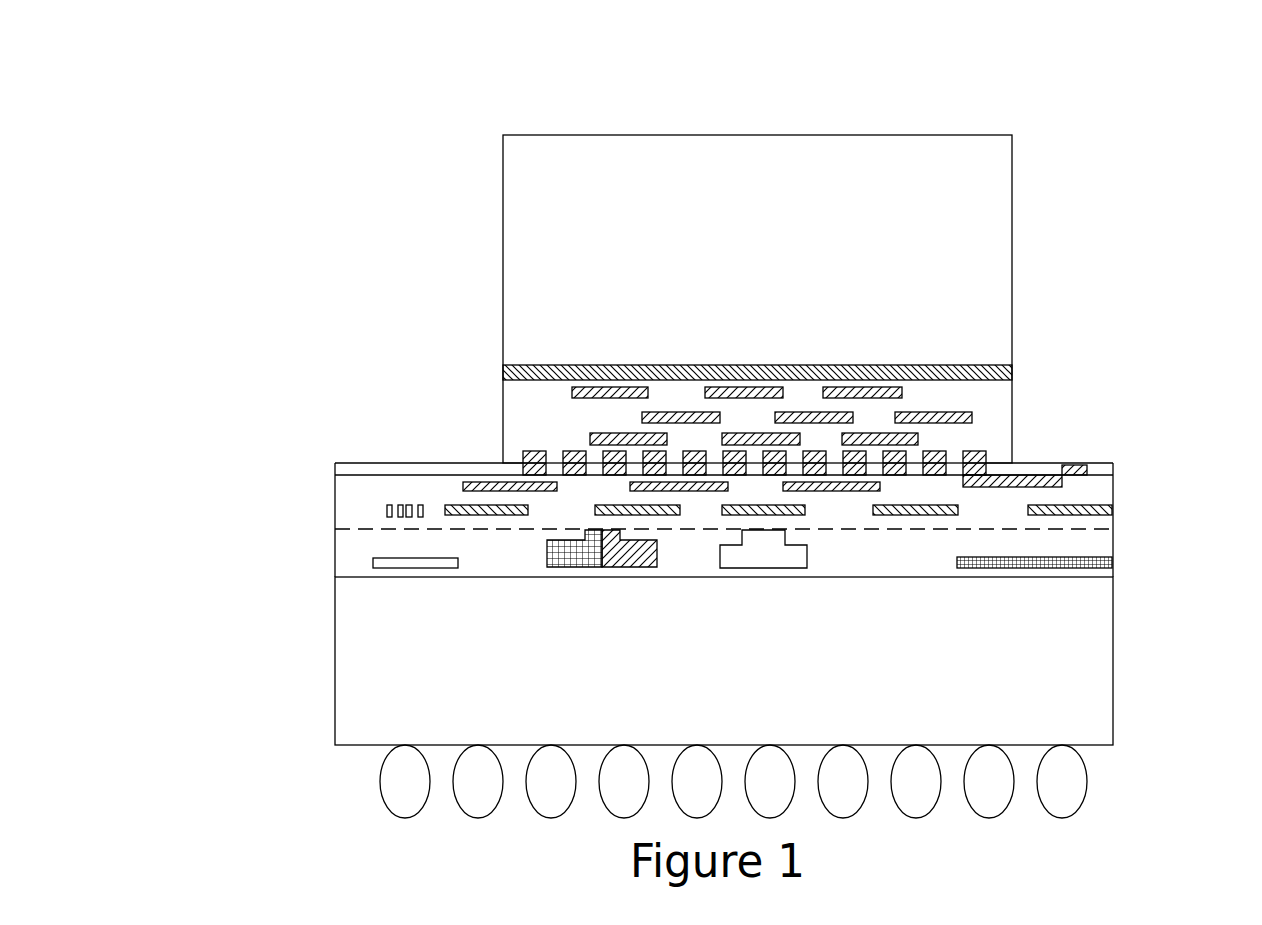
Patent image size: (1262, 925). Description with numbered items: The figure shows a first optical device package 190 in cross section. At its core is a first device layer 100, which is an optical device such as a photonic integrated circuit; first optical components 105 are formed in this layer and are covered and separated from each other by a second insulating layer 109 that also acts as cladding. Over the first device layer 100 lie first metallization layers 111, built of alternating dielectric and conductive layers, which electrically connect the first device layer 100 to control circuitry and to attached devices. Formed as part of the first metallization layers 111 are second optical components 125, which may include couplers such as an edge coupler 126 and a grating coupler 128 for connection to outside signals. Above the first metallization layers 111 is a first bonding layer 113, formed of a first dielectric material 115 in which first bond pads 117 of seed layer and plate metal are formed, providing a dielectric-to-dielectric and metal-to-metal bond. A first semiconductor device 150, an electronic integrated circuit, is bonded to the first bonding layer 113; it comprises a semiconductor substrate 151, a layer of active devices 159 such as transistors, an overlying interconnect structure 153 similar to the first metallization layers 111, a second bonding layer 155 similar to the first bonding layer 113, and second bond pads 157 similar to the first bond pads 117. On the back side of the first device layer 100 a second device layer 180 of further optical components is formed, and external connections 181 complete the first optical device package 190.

The first optical device package 190 is at (166, 126).
The first semiconductor device 150 is at (1129, 125).
The semiconductor substrate 151 is at (785, 273).
The layer of active devices 159 is at (925, 365).
The interconnect structure 153 is at (1046, 378).
The second bond pads 157 is at (540, 452).
The first bond pads 117 is at (518, 452).
The second bonding layer 155 is at (1017, 457).
The first bonding layer 113 is at (331, 460).
The first dielectric material 115 is at (348, 470).
The first metallization layers 111 is at (324, 478).
The second optical components 125 is at (455, 503).
The edge coupler 126 is at (1080, 507).
The grating coupler 128 is at (395, 505).
The first device layer 100 is at (1131, 530).
The first optical components 105 is at (550, 550).
The second insulating layer 109 is at (907, 570).
The second device layer 180 is at (752, 681).
The external connections 181 is at (1060, 770).